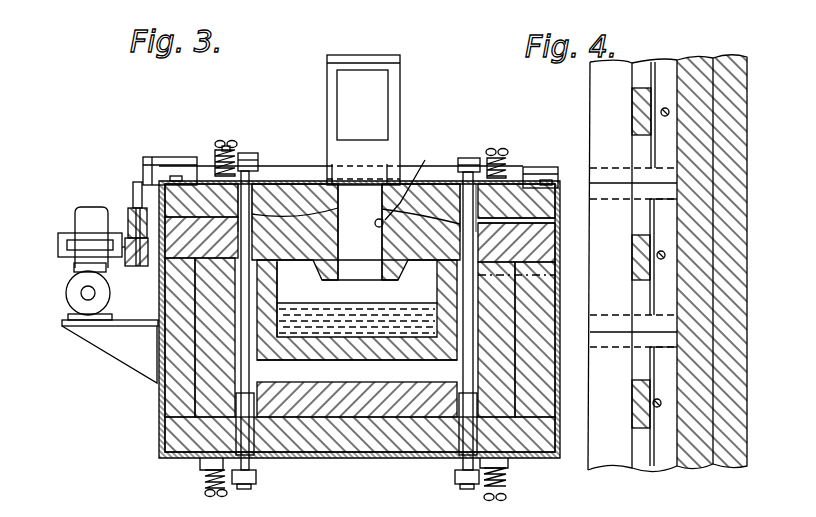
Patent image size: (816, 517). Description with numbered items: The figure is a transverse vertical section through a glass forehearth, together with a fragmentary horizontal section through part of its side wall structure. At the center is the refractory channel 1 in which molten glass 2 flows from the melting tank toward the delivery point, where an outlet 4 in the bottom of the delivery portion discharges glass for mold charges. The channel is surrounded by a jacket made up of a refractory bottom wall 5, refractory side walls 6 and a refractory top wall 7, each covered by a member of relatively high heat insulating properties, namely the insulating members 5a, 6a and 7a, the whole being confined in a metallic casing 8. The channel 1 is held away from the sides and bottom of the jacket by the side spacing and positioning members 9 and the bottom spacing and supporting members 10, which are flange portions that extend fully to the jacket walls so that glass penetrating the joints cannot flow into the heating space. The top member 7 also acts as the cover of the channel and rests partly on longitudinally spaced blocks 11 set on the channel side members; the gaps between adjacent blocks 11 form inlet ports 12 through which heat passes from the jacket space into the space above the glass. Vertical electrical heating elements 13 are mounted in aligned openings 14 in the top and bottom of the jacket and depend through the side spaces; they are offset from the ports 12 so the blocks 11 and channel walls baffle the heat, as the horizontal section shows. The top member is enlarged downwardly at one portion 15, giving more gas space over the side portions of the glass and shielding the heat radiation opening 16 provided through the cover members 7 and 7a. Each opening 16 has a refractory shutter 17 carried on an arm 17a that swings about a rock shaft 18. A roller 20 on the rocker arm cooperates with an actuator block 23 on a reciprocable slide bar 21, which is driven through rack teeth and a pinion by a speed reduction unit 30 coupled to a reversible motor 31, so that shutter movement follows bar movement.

In FIG. 3, the refractory channel 1 is at (304, 357).
In FIG. 3, the molten glass 2 is at (355, 318).
In FIG. 3, the outlet 4 is at (432, 303).
In FIG. 3, the refractory bottom wall 5 is at (384, 410).
In FIG. 3, the heat insulating member 5a is at (338, 437).
In FIG. 3, the refractory side walls 6 is at (208, 355).
In FIG. 3, the heat insulating member 6a is at (173, 402).
In FIG. 3, the refractory top wall 7 is at (405, 235).
In FIG. 3, the heat insulating member 7a is at (283, 198).
In FIG. 3, the metallic casing 8 is at (413, 456).
In FIG. 3, the side spacing and positioning members 9 is at (477, 347).
In FIG. 4, the side spacing and positioning members 9 is at (683, 210).
In FIG. 3, the bottom spacing and supporting members 10 is at (323, 373).
In FIG. 4, the bottom spacing and supporting members 10 is at (606, 173).
In FIG. 3, the blocks 11 is at (272, 288).
In FIG. 4, the blocks 11 is at (635, 394).
In FIG. 4, the inlet ports 12 is at (637, 218).
In FIG. 3, the electrical heating elements 13 is at (246, 272).
In FIG. 4, the electrical heating elements 13 is at (658, 258).
In FIG. 3, the openings 14 is at (520, 219).
In FIG. 3, the enlarged portion 15 is at (322, 279).
In FIG. 3, the heat radiation openings 16 is at (407, 183).
In FIG. 3, the shutter 17 is at (380, 97).
In FIG. 3, the carrying arm 17a is at (338, 148).
In FIG. 3, the rock shaft 18 is at (455, 178).
In FIG. 3, the roller 20 is at (150, 167).
In FIG. 3, the slide bar 21 is at (128, 212).
In FIG. 3, the shutter actuator block 23 is at (137, 192).
In FIG. 3, the speed reduction unit 30 is at (78, 220).
In FIG. 3, the reversible motor 31 is at (68, 292).